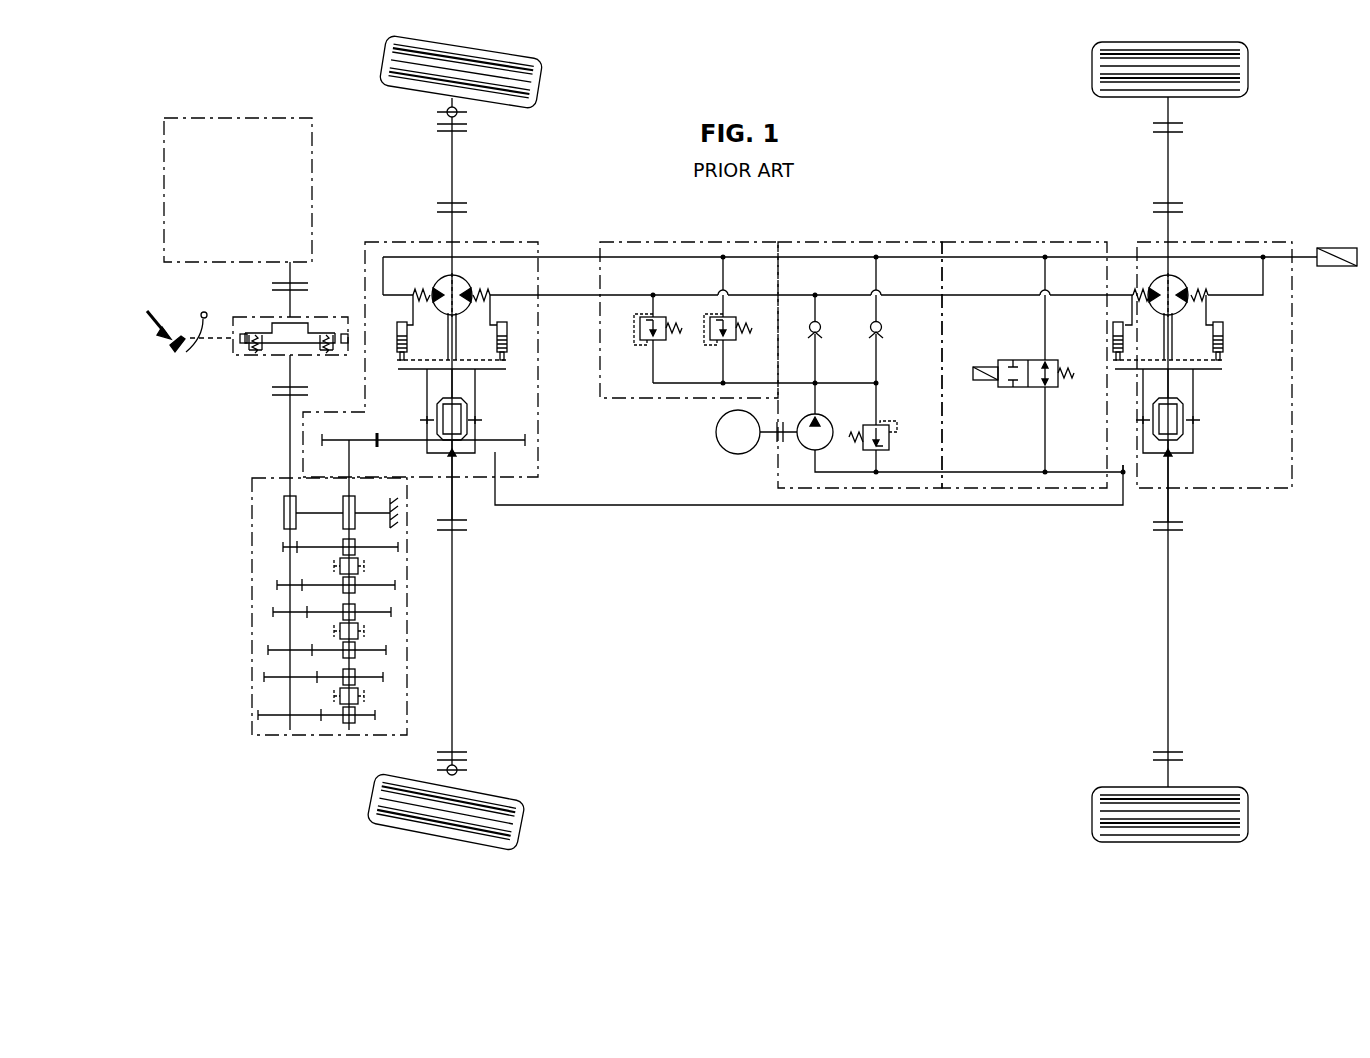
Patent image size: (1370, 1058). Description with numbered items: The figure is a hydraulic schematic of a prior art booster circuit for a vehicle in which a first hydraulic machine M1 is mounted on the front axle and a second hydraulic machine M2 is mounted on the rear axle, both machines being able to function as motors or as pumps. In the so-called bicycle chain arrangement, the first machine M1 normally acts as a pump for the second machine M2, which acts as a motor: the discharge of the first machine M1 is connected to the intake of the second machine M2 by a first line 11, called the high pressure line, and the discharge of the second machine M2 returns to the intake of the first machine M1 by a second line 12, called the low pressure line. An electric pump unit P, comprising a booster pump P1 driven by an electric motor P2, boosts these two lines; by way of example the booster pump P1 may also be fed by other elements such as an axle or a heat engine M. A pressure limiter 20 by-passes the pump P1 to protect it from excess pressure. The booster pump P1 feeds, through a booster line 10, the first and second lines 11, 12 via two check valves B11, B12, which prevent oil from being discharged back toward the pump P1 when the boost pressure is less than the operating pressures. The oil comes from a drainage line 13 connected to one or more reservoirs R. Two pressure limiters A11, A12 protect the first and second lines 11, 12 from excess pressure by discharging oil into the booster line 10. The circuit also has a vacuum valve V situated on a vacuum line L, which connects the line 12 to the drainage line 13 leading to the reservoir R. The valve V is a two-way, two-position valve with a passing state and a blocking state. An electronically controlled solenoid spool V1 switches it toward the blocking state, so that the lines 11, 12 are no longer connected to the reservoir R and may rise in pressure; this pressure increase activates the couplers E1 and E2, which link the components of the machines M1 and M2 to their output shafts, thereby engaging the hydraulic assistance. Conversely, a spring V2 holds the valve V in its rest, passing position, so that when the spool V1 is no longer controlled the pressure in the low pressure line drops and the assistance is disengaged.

The heat engine M is at (238, 190).
The second line 12 is at (566, 256).
The first line 11 is at (568, 297).
The drainage line 13 is at (818, 506).
The booster line 10 is at (812, 396).
The pressure limiter A11 is at (652, 341).
The pressure limiter A12 is at (722, 341).
The check valve B11 is at (821, 333).
The check valve B12 is at (883, 333).
The electric pump unit P is at (766, 456).
The booster pump P1 is at (832, 430).
The electric motor P2 is at (716, 432).
The pressure limiter 20 is at (891, 428).
The vacuum valve V is at (1020, 360).
The solenoid spool V1 is at (984, 382).
The spring V2 is at (1069, 380).
The vacuum line L is at (1046, 334).
The first hydraulic machine M1 is at (462, 276).
The second hydraulic machine M2 is at (1184, 277).
The coupler E1 is at (394, 352).
The coupler E2 is at (1228, 348).
The reservoir R is at (1124, 506).